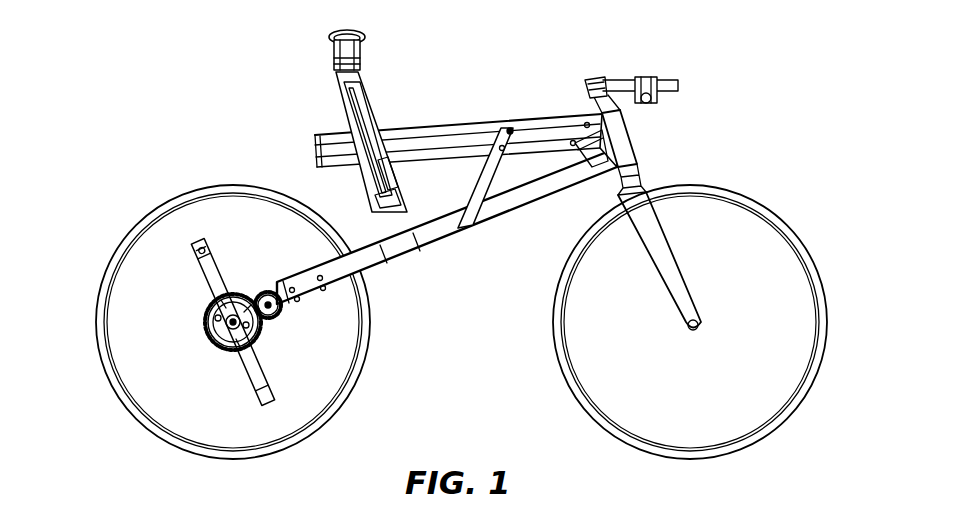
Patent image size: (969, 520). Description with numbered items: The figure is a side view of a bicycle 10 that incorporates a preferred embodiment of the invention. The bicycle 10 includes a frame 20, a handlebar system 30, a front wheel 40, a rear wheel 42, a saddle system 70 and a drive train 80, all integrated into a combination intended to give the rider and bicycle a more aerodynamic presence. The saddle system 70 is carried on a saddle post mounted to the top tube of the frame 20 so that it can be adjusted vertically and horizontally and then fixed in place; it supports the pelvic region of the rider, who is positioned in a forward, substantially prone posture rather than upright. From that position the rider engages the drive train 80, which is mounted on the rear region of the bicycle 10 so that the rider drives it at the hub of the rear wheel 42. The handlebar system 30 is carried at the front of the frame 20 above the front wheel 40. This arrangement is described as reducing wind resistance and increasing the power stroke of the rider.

The bicycle 10 is at (213, 129).
The frame 20 is at (409, 259).
The handlebar system 30 is at (668, 74).
The front wheel 40 is at (752, 194).
The rear wheel 42 is at (134, 228).
The saddle system 70 is at (334, 61).
The drive train 80 is at (210, 344).